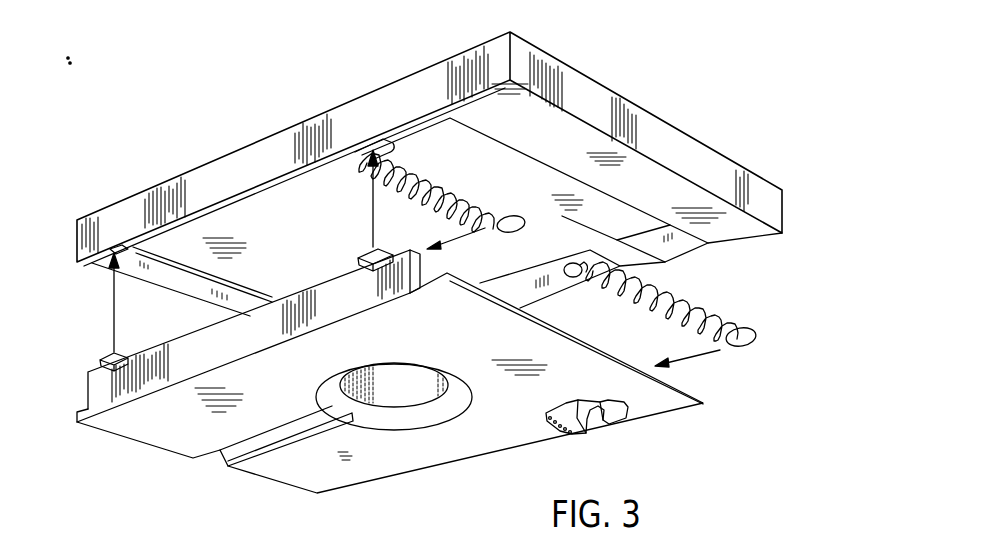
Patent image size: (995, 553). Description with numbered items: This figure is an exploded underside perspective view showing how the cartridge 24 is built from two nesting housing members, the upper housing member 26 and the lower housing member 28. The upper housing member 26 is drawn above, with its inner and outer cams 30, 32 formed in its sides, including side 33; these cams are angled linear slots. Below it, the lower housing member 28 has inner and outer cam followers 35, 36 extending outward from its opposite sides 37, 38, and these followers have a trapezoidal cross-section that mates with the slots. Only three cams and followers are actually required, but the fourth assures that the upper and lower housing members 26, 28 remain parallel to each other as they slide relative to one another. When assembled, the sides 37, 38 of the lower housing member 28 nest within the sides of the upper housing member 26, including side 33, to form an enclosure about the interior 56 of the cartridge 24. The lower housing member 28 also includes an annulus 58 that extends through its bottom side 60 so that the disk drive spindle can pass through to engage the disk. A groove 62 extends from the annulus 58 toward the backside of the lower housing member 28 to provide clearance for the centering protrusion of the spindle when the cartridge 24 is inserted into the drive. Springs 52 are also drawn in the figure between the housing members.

The cartridge 24 is at (680, 110).
The upper housing member 26 is at (735, 167).
The lower housing member 28 is at (673, 402).
The inner cam 30 is at (110, 248).
The outer cam 32 is at (384, 140).
The side 33 is at (262, 157).
The inner cam follower 35 is at (102, 355).
The outer cam follower 36 is at (583, 427).
The side 37 is at (255, 342).
The side 38 is at (600, 427).
The spring 52 is at (443, 183).
The interior 56 is at (351, 207).
The annulus 58 is at (453, 405).
The bottom side 60 is at (337, 293).
The groove 62 is at (283, 438).